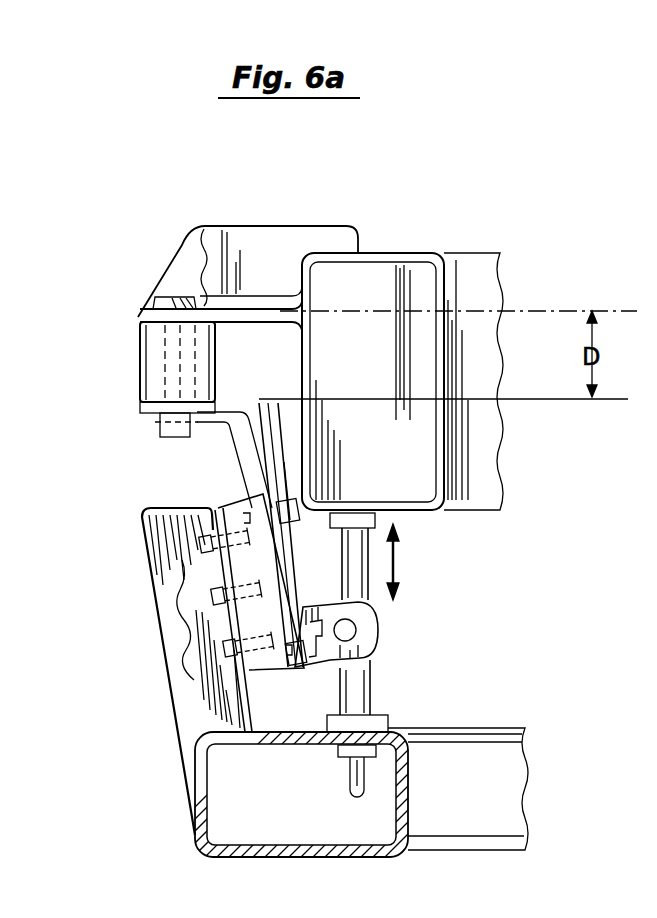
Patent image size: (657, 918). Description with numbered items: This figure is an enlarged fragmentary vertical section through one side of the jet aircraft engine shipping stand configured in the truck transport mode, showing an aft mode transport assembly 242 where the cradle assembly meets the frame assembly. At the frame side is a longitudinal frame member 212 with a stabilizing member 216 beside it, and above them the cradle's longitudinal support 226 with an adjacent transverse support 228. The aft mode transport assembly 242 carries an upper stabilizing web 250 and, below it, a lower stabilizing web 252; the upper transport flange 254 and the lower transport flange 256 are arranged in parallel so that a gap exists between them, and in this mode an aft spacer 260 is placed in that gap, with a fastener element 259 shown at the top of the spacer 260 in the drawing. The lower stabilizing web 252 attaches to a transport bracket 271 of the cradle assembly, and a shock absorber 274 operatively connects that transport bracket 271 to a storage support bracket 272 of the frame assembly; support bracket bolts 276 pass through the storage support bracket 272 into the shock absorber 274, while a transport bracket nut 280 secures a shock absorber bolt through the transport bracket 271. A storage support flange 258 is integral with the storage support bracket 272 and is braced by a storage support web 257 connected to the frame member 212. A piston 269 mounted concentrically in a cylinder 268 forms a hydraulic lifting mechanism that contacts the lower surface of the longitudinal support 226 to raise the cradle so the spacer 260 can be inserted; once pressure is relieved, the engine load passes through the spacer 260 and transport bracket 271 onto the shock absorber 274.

The longitudinal frame member 212 is at (196, 820).
The stabilizing member 216 is at (452, 792).
The longitudinal support 226 is at (408, 278).
The transverse support 228 is at (478, 288).
The aft mode transport assembly 242 is at (400, 232).
The upper stabilizing web 250 is at (275, 265).
The lower stabilizing web 252 is at (227, 425).
The upper transport flange 254 is at (136, 316).
The lower transport flange 256 is at (140, 405).
The storage support web 257 is at (180, 625).
The storage support flange 258 is at (145, 512).
The bolt head 259 is at (168, 296).
The aft spacer 260 is at (165, 358).
The cylinder 268 is at (370, 682).
The piston 269 is at (363, 560).
The transport bracket 271 is at (262, 426).
The storage support bracket 272 is at (252, 701).
The shock absorber 274 is at (224, 504).
The support bracket bolt 276 is at (210, 595).
The transport bracket nut 280 is at (288, 462).